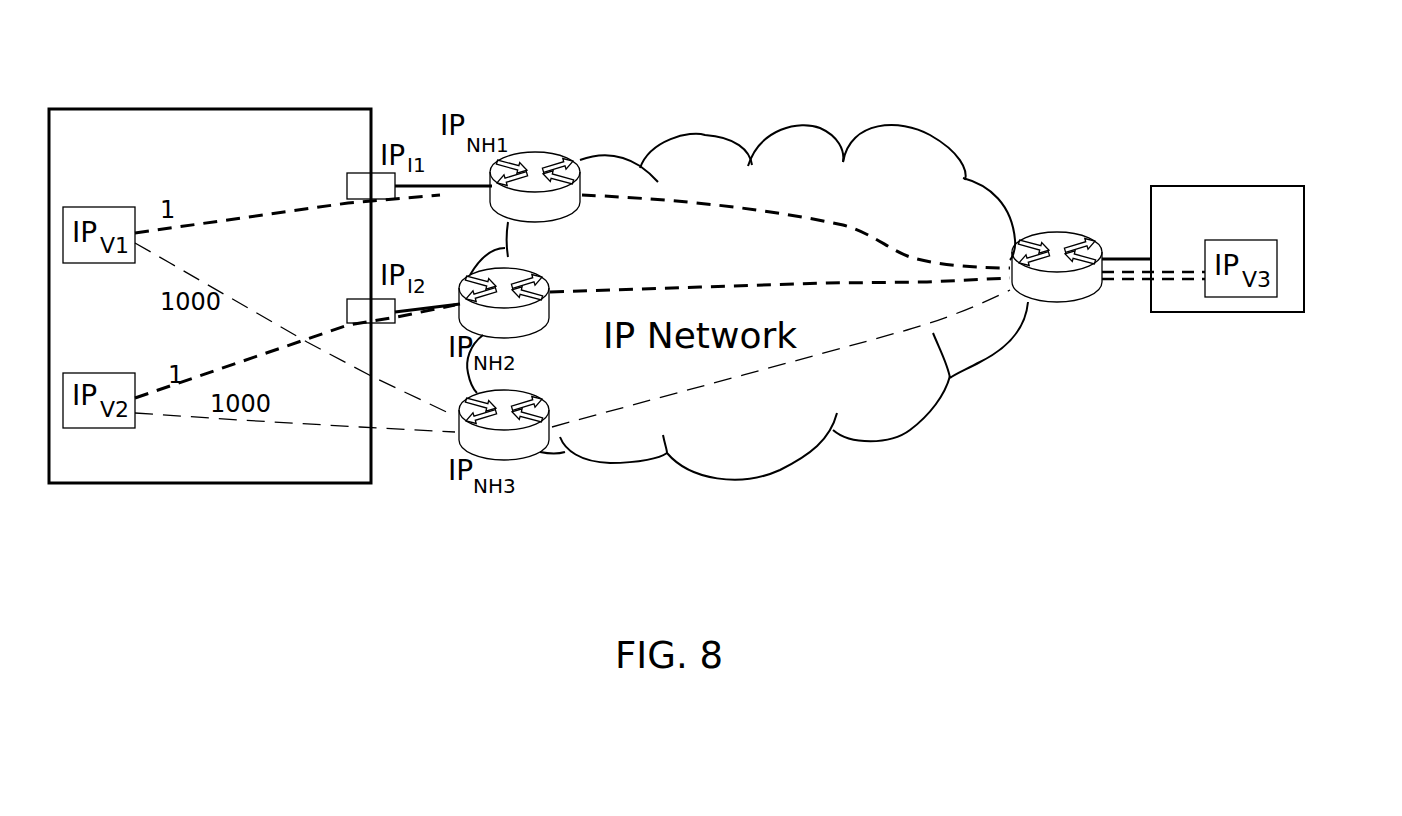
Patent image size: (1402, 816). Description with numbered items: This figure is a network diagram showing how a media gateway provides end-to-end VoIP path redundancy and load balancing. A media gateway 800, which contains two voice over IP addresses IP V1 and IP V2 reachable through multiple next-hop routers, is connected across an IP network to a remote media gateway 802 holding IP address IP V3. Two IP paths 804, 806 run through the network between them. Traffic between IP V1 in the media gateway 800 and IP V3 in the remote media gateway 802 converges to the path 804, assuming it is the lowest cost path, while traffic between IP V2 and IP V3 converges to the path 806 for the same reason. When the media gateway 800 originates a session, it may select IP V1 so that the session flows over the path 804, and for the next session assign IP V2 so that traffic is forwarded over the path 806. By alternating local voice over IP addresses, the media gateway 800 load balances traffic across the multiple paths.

The media gateway 800 is at (191, 108).
The remote media gateway 802 is at (1305, 222).
The IP path 804 is at (882, 233).
The IP path 806 is at (700, 283).